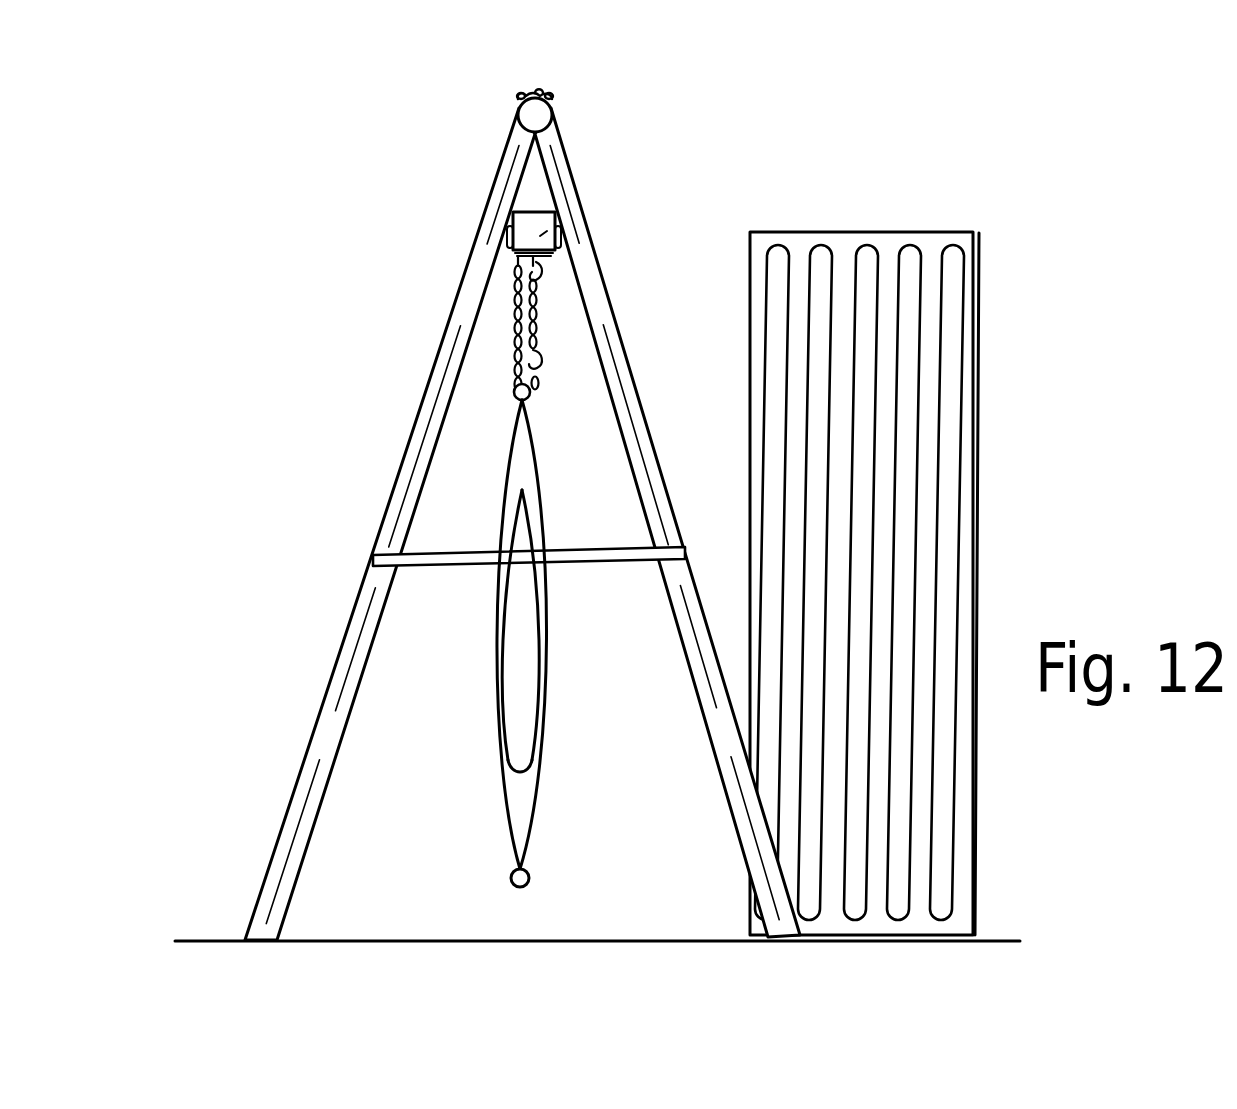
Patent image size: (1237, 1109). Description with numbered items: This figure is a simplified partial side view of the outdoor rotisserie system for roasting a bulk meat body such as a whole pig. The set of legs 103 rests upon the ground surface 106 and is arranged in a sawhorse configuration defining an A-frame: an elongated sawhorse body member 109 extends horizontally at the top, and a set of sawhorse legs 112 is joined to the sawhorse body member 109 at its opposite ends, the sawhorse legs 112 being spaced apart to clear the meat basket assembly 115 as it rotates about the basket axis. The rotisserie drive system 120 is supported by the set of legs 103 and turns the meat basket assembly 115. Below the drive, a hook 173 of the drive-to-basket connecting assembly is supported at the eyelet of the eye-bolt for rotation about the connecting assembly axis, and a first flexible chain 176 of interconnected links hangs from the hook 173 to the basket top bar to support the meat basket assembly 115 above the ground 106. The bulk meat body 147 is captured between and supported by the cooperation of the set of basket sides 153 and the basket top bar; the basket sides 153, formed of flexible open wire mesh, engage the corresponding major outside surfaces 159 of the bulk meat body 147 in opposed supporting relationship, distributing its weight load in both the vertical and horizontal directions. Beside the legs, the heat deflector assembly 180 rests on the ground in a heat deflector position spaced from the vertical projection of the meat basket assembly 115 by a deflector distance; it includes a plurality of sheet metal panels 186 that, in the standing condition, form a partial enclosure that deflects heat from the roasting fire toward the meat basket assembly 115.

The set of legs 103 is at (522, 505).
The ground surface 106 is at (1003, 928).
The sawhorse body member 109 is at (537, 110).
The set of sawhorse legs 112 is at (597, 232).
The meat basket assembly 115 is at (545, 692).
The rotisserie drive system 120 is at (507, 165).
The bulk meat body 147 is at (515, 655).
The set of basket sides 153 is at (498, 768).
The major outside surfaces 159 is at (532, 770).
The hook 173 is at (513, 268).
The first flexible chain 176 is at (520, 350).
The heat deflector assembly 180 is at (843, 213).
The panels 186 is at (988, 427).